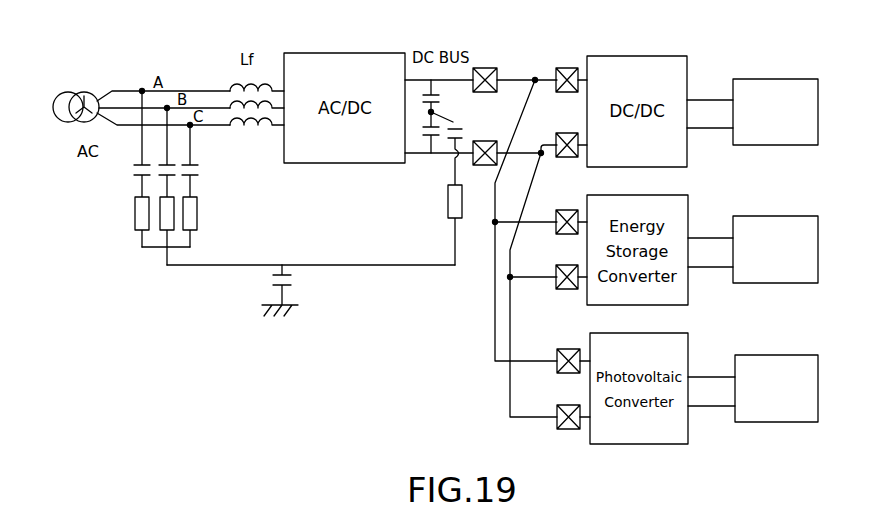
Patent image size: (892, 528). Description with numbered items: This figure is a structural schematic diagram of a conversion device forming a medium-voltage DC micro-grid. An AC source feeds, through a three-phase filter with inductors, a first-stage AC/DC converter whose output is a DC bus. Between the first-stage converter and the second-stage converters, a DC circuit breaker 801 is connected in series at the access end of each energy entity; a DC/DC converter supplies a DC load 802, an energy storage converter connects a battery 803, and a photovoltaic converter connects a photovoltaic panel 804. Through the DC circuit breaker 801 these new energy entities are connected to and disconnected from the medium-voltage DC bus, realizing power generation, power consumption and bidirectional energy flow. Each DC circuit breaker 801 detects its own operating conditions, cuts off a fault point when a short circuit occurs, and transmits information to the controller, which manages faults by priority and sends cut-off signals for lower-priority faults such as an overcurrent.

The DC circuit breaker 801 is at (497, 68).
The DC load 802 is at (760, 79).
The battery 803 is at (752, 216).
The photovoltaic panel 804 is at (750, 355).